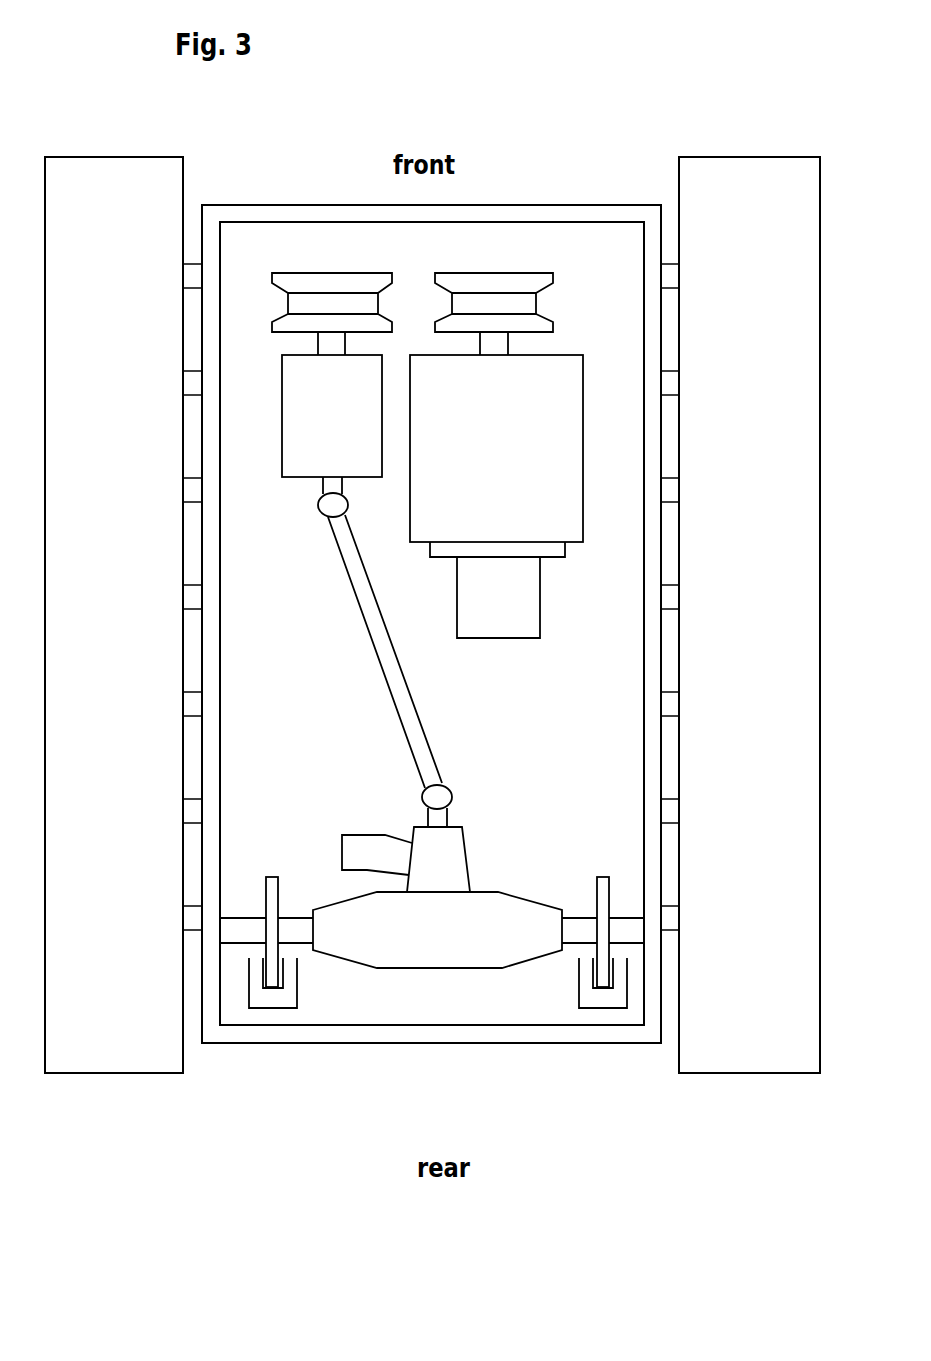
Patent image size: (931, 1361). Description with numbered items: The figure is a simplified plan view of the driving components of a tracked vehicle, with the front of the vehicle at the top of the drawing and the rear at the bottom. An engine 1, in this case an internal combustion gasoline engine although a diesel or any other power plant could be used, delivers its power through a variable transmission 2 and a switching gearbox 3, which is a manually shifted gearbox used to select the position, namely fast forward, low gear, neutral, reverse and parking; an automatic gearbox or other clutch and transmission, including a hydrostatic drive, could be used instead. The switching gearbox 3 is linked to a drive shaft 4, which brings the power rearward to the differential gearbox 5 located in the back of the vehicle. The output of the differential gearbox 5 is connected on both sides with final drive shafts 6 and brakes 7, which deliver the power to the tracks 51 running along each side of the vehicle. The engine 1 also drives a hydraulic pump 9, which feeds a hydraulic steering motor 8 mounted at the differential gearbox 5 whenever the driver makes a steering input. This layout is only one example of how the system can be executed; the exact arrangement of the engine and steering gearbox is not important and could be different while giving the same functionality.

The engine 1 is at (506, 438).
The variable transmission 2 is at (407, 297).
The switching gearbox 3 is at (341, 423).
The drive shaft 4 is at (405, 713).
The differential gearbox 5 is at (446, 938).
The final drive shafts 6 is at (247, 932).
The brakes 7 is at (270, 998).
The hydraulic steering motor 8 is at (367, 849).
The hydraulic pump 9 is at (508, 607).
The tracks 51 is at (126, 615).